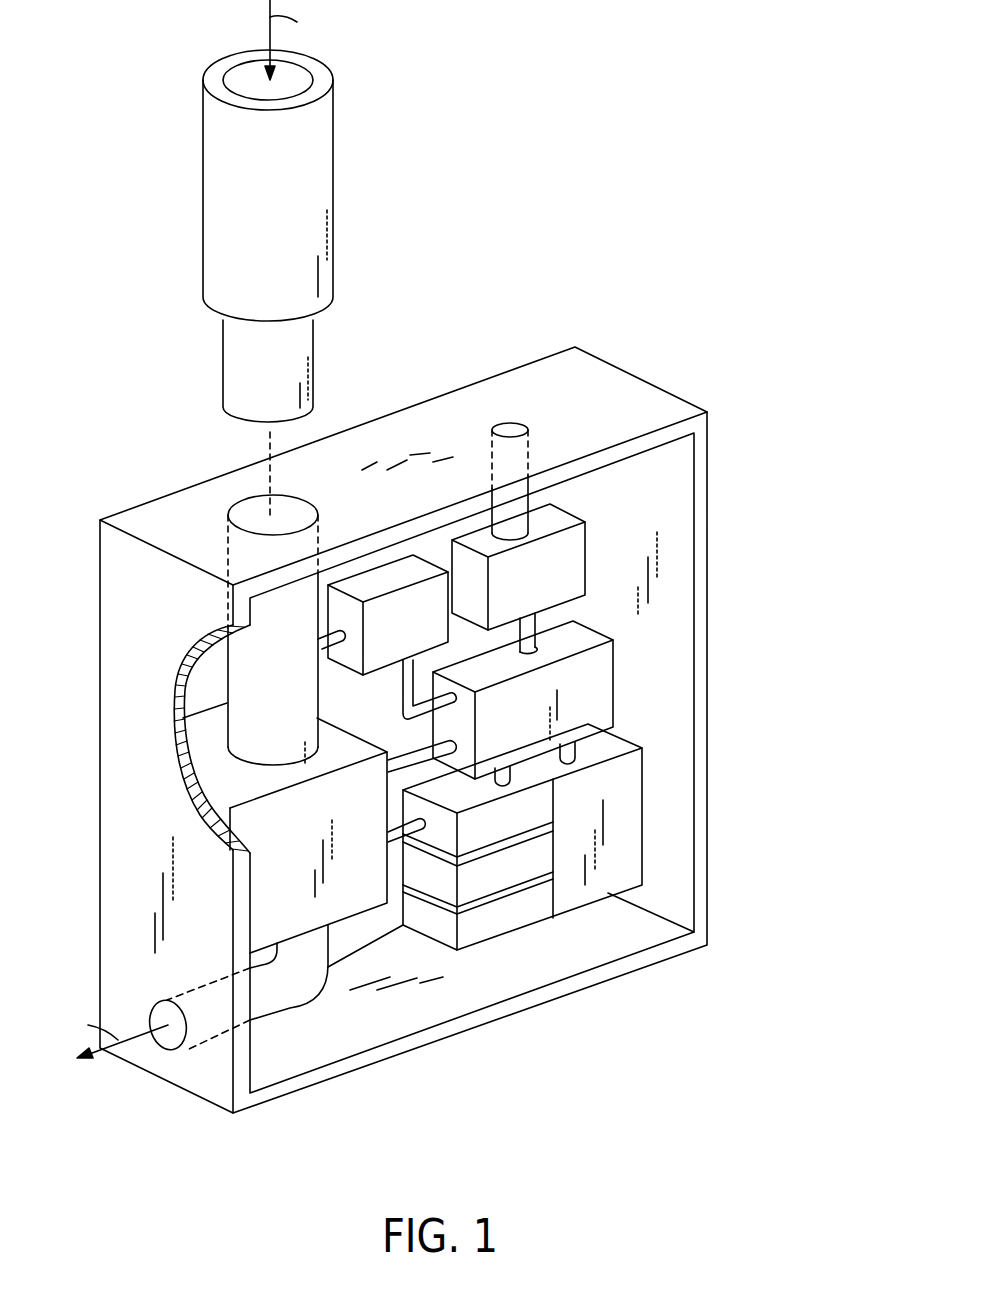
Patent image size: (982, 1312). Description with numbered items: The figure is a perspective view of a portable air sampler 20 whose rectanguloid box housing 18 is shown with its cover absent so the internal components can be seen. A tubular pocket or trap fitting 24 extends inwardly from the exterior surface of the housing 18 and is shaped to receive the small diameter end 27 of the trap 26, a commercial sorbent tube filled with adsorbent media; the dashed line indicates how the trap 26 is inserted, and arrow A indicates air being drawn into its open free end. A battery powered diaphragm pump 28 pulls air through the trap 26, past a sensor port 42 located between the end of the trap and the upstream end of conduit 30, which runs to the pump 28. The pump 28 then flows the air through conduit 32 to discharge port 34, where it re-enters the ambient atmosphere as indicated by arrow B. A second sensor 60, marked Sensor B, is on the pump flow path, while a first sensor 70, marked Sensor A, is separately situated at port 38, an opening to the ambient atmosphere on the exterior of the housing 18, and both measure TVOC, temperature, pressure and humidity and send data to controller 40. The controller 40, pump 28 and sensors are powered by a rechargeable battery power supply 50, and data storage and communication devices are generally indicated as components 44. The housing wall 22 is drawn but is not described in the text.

The housing 18 is at (96, 603).
The portable air sampler 20 is at (434, 697).
The housing 22 is at (710, 557).
The trap fitting 24 is at (243, 520).
The trap 26 is at (340, 198).
The small diameter end 27 is at (315, 363).
The pump 28 is at (267, 870).
The conduit 30 is at (238, 719).
The conduit 32 is at (280, 998).
The discharge port 34 is at (160, 1047).
The port 38 is at (513, 421).
The controller 40 is at (598, 691).
The sensor port 42 is at (318, 648).
The components 44 is at (512, 940).
The battery power supply 50 is at (644, 837).
The second sensor 60 is at (404, 596).
The first sensor 70 is at (570, 559).